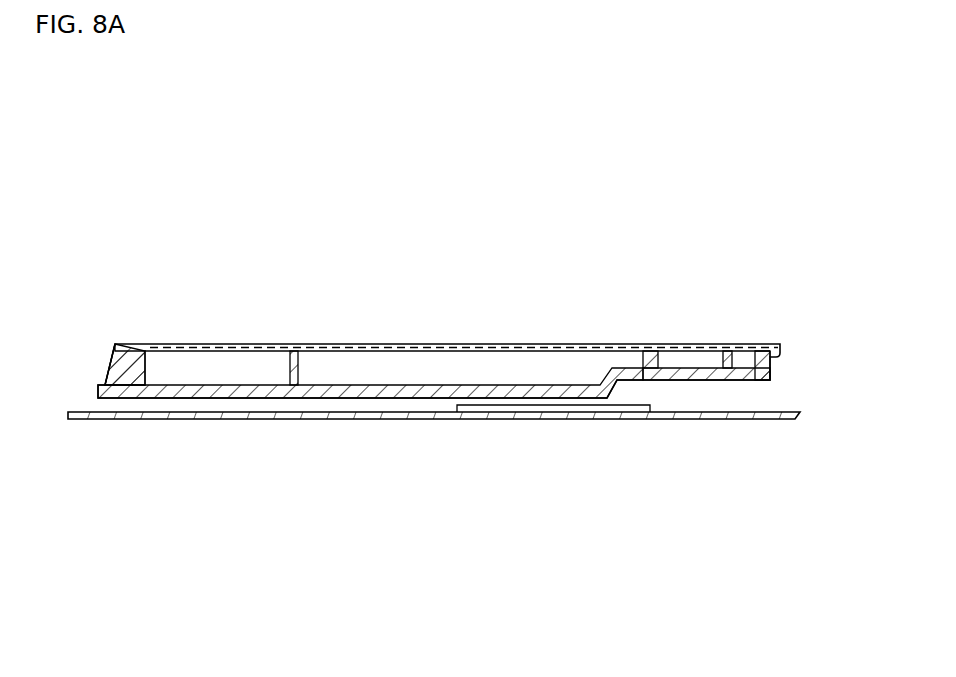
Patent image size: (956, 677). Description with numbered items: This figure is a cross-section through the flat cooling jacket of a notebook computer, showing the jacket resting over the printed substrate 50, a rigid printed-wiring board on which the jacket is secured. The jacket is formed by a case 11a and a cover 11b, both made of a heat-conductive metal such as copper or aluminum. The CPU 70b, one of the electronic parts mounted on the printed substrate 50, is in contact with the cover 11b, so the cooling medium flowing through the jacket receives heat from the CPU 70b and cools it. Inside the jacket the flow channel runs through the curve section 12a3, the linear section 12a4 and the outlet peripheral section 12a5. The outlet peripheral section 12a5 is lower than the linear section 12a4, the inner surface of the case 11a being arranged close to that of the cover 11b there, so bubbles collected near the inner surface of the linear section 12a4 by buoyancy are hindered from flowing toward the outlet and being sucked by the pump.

The case 11a is at (771, 372).
The cover 11b is at (360, 348).
The curve section 12a3 is at (238, 383).
The linear section 12a4 is at (500, 385).
The outlet peripheral section 12a5 is at (622, 372).
The printed substrate 50 is at (205, 413).
The CPU 70b is at (563, 406).